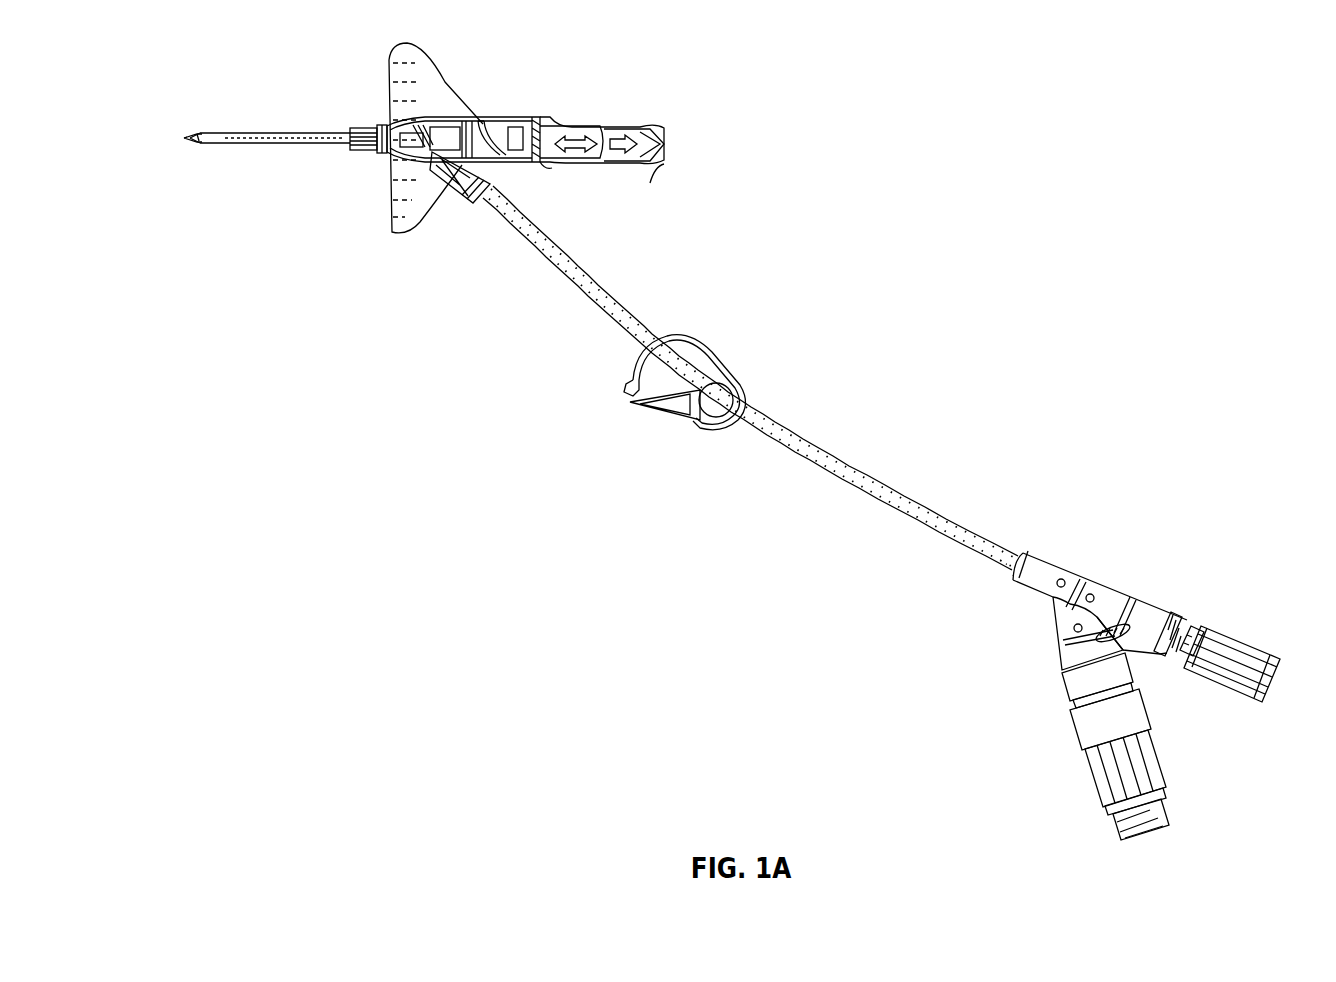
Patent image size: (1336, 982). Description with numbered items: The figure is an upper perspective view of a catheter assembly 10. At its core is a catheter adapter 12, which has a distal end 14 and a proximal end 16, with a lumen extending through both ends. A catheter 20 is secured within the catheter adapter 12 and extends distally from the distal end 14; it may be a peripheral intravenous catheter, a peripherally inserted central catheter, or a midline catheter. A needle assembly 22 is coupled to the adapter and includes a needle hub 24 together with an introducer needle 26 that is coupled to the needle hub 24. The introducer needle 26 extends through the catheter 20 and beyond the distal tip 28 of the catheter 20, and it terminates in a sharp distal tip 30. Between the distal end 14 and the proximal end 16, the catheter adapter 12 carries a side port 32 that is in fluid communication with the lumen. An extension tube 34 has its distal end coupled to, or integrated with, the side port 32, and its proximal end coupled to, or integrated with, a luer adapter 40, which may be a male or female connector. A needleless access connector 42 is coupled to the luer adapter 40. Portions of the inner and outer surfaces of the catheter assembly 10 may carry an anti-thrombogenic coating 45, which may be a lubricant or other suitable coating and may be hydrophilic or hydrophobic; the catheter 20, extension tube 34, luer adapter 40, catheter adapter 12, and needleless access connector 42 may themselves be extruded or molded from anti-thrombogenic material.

The catheter assembly 10 is at (1006, 238).
The catheter adapter 12 is at (463, 111).
The distal end 14 is at (354, 172).
The proximal end 16 is at (553, 195).
The catheter 20 is at (270, 110).
The needle assembly 22 is at (680, 191).
The needle hub 24 is at (602, 111).
The introducer needle 26 is at (159, 124).
The distal tip 28 is at (207, 110).
The sharp distal tip 30 is at (159, 170).
The side port 32 is at (460, 211).
The extension tube 34 is at (750, 378).
The luer adapter 40 is at (1141, 626).
The needleless access connector 42 is at (1092, 746).
The anti-thrombogenic coating 45 is at (1045, 544).